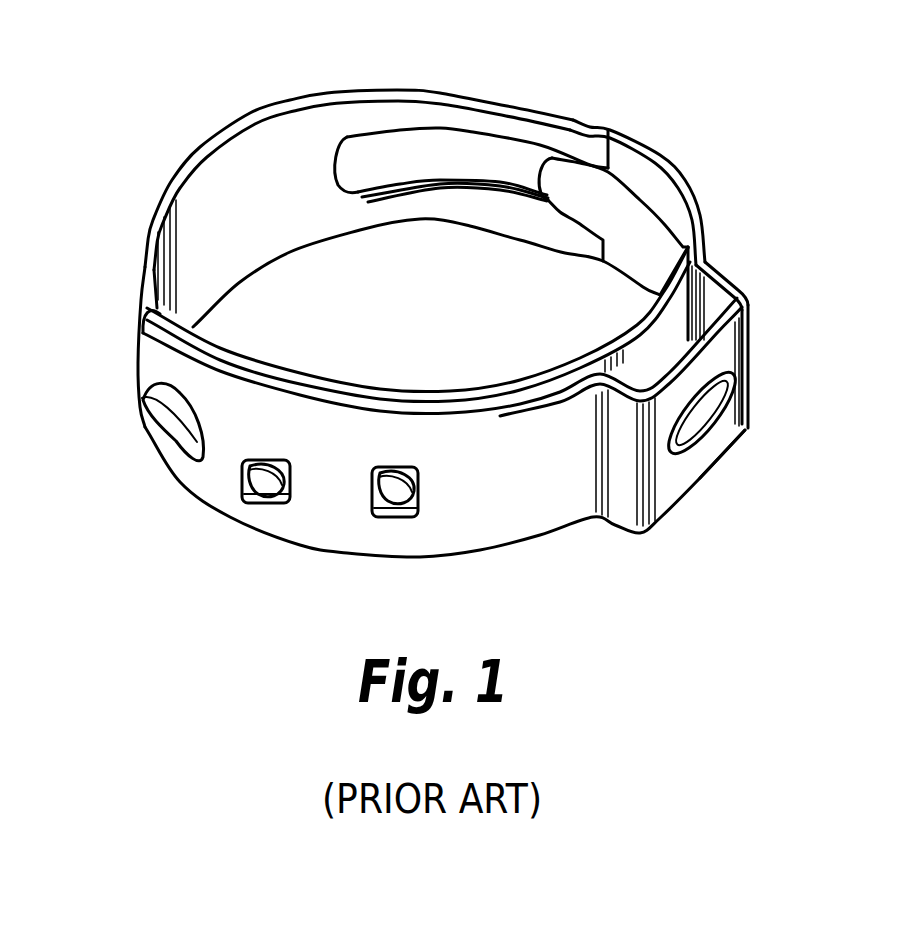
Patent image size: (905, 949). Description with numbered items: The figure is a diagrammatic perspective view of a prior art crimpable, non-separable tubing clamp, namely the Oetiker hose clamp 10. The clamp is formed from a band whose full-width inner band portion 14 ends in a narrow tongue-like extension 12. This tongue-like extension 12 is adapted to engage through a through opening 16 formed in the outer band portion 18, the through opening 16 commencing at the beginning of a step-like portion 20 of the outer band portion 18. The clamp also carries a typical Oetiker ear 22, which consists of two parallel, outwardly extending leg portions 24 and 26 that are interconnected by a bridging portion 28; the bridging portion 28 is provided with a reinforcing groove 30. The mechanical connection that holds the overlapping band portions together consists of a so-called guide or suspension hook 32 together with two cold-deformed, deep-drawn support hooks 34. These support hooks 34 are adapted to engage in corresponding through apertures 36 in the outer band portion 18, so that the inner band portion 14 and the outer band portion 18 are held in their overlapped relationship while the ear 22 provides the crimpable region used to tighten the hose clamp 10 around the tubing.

The hose clamp 10 is at (434, 311).
The tongue-like extension 12 is at (585, 203).
The inner band portion 14 is at (452, 388).
The through opening 16 is at (462, 150).
The outer band portion 18 is at (158, 366).
The step-like portion 20 is at (592, 126).
The ear 22 is at (680, 476).
The leg portion 24 is at (627, 500).
The leg portion 26 is at (728, 265).
The bridging portion 28 is at (732, 352).
The reinforcing groove 30 is at (718, 412).
The guide or suspension hook 32 is at (165, 410).
The support hooks 34 is at (257, 474).
The through apertures 36 is at (410, 478).